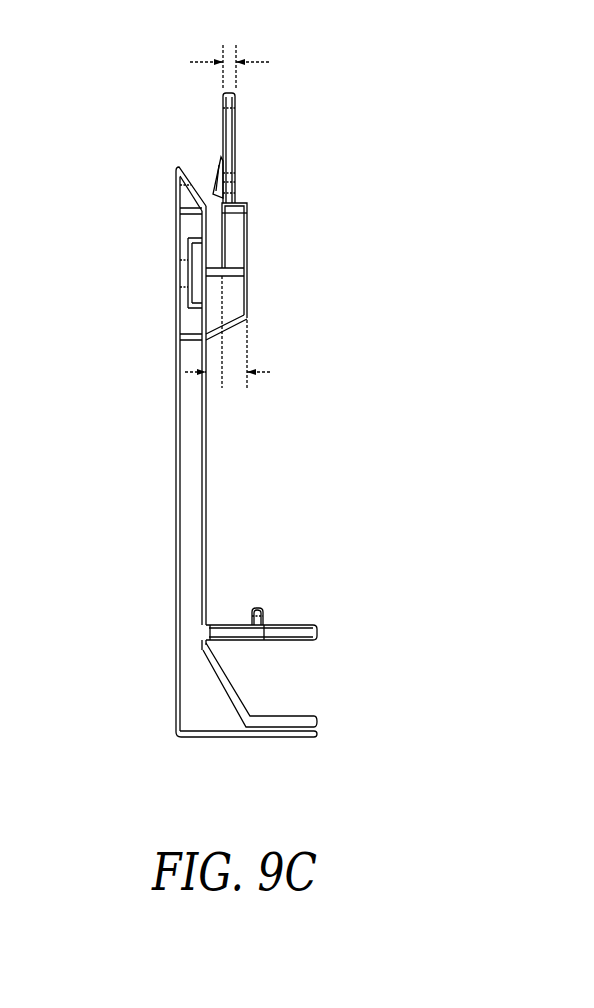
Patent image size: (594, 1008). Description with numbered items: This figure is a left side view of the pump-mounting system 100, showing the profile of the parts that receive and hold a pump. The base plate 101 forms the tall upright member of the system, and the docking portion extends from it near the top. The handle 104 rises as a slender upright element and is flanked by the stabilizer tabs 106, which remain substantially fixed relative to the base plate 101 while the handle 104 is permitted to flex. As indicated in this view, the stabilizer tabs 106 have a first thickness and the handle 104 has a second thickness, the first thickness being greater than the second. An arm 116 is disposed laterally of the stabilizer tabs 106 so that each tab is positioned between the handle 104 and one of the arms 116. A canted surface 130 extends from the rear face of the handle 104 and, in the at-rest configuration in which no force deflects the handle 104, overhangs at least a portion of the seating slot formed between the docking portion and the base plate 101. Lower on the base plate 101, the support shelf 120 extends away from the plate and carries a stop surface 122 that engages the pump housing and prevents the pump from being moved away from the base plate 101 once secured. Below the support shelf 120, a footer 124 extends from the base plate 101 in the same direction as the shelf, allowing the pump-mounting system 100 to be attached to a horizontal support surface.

The pump-mounting system 100 is at (396, 88).
The base plate 101 is at (182, 445).
The handle 104 is at (232, 135).
The stabilizer tabs 106 is at (236, 240).
The arms 116 is at (186, 230).
The support shelf 120 is at (287, 633).
The stop surfaces 122 is at (257, 608).
The footers 124 is at (187, 703).
The canted surface 130 is at (219, 168).